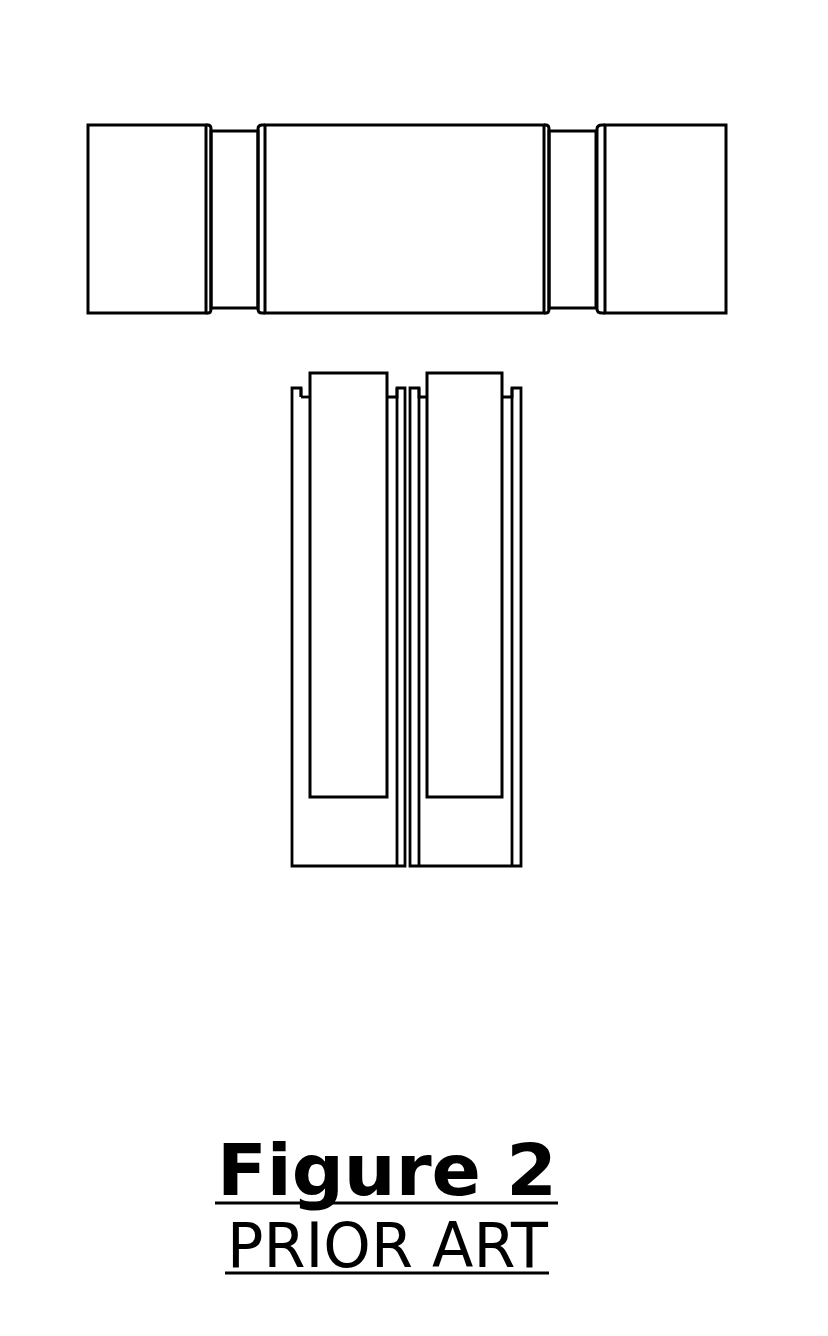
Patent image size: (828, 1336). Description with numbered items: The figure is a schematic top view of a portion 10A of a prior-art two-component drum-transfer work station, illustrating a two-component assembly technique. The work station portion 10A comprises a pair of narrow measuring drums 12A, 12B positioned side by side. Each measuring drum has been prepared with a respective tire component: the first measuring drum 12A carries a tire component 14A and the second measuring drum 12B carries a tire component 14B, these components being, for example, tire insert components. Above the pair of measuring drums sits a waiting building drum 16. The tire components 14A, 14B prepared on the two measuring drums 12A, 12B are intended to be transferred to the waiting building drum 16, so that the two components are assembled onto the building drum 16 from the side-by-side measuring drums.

The portion of a two-component work station 10A is at (268, 30).
The building drum 16 is at (673, 124).
The measuring drum 12A is at (348, 866).
The measuring drum 12B is at (470, 866).
The tire component 14A is at (328, 373).
The tire component 14B is at (482, 373).